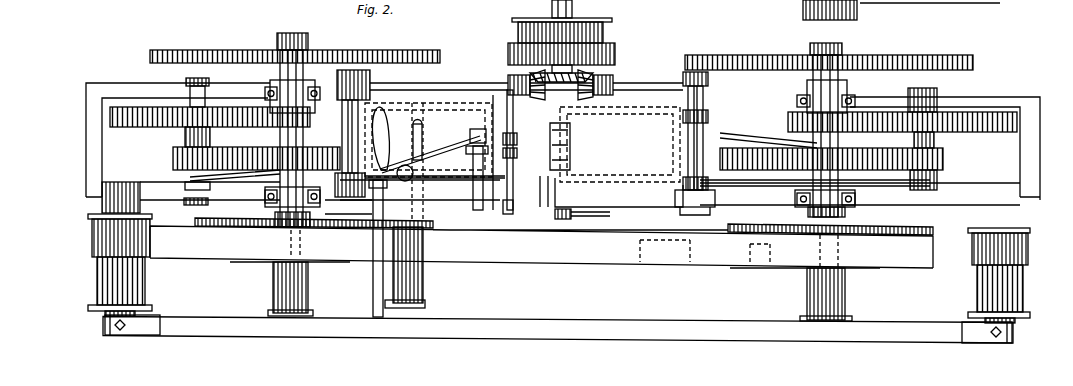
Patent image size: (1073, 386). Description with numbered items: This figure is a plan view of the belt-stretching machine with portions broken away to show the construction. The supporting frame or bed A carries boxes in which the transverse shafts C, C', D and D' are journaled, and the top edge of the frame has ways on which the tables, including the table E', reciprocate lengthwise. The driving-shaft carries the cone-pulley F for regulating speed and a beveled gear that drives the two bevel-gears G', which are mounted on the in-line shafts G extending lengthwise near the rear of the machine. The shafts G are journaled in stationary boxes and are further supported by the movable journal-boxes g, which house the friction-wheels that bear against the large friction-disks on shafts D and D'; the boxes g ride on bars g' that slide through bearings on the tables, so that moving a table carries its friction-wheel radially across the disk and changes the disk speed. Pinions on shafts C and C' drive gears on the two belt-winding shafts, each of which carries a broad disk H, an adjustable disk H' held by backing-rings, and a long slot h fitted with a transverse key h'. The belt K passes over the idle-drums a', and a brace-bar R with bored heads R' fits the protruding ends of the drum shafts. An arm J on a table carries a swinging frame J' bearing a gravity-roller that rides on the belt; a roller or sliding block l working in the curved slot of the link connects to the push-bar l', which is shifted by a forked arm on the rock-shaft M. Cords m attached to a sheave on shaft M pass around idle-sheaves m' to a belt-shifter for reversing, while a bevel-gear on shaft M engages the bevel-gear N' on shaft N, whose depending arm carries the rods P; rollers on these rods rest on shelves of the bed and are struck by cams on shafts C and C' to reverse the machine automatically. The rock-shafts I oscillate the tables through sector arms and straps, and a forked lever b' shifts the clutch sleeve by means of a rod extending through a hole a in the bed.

The supporting frame or bed A is at (86, 133).
The transverse shaft D' is at (285, 130).
The transverse shaft C' is at (184, 141).
The transverse shaft C is at (933, 139).
The transverse shaft D is at (857, 141).
The rod P is at (226, 182).
The idle-drum a' is at (567, 268).
The brace-bar R is at (558, 330).
The head R' is at (558, 329).
The disk H is at (545, 234).
The disk H' is at (555, 275).
The key h' is at (299, 307).
The slot h is at (831, 312).
The arm J is at (367, 248).
The swinging frame J' is at (414, 306).
The belt K is at (588, 173).
The table E' is at (565, 144).
The roller l is at (391, 143).
The push-bar l' is at (426, 140).
The cone-pulley F is at (607, 42).
The bevel-gear G' is at (570, 95).
The shaft G is at (526, 78).
The movable journal-box g is at (521, 71).
The bar g' is at (511, 141).
The rock-shaft I is at (715, 210).
The rock-shaft M is at (514, 134).
The cord m is at (514, 138).
The idle-sheave m' is at (512, 141).
The shaft N is at (572, 148).
The bevel-gear N' is at (585, 147).
The forked lever b' is at (768, 135).
The hole a is at (943, 181).